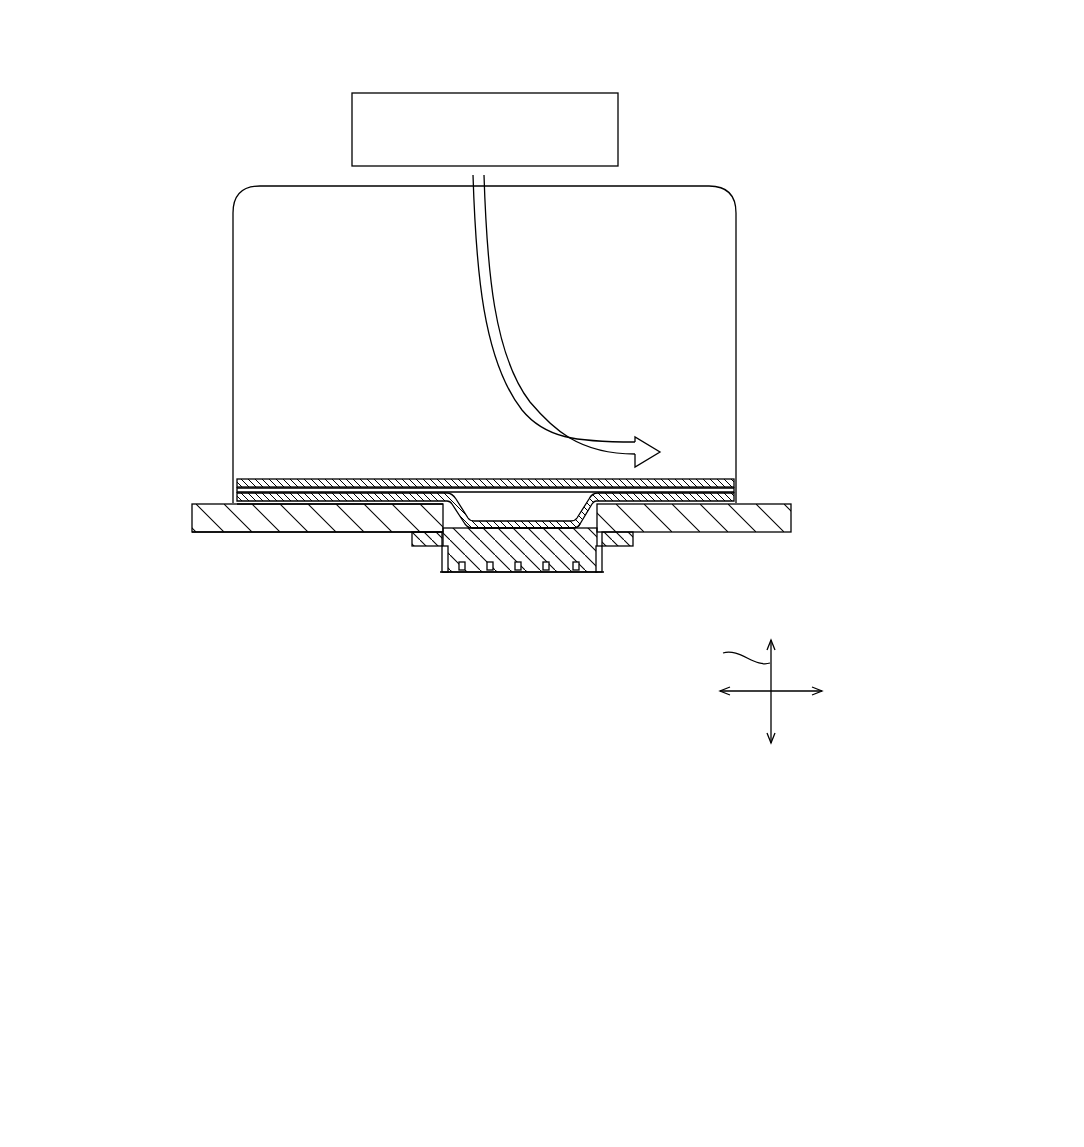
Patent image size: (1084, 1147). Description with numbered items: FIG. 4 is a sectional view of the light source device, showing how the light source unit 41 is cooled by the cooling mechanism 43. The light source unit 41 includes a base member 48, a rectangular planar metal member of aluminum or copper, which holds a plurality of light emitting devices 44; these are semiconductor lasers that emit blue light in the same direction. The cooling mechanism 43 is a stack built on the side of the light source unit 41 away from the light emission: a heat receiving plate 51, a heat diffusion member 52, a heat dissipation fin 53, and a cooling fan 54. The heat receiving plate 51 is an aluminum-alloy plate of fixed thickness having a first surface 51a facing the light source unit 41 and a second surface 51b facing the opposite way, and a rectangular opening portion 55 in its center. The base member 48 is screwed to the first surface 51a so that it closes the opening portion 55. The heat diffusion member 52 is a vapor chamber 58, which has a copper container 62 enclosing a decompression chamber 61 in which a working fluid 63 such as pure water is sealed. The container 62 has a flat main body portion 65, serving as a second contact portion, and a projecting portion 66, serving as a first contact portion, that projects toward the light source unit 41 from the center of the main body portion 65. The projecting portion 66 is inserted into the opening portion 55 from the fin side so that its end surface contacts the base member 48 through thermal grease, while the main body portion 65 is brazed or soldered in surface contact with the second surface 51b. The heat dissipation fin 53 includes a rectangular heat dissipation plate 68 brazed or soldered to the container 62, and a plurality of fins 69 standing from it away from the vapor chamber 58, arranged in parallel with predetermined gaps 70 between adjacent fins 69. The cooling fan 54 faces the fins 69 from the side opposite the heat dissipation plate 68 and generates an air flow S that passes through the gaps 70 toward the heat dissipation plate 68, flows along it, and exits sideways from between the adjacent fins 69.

The light source unit 41 is at (493, 604).
The cooling mechanism 43 is at (205, 168).
The light emitting devices 44 is at (481, 609).
The base member 48 is at (485, 586).
The heat receiving plate 51 is at (250, 535).
The first surface 51a is at (213, 533).
The second surface 51b is at (215, 504).
The heat diffusion member 52 is at (527, 444).
The heat dissipation fin 53 is at (215, 347).
The cooling fan 54 is at (612, 85).
The opening portion 55 is at (438, 546).
The vapor chamber 58 is at (527, 444).
The decompression chamber 61 is at (557, 505).
The container 62 is at (673, 492).
The working fluid 63 is at (535, 498).
The main body portion 65 is at (680, 505).
The projecting portion 66 is at (596, 575).
The heat dissipation plate 68 is at (279, 485).
The fins 69 is at (655, 192).
The gaps 70 is at (404, 408).
The air flow S is at (485, 335).